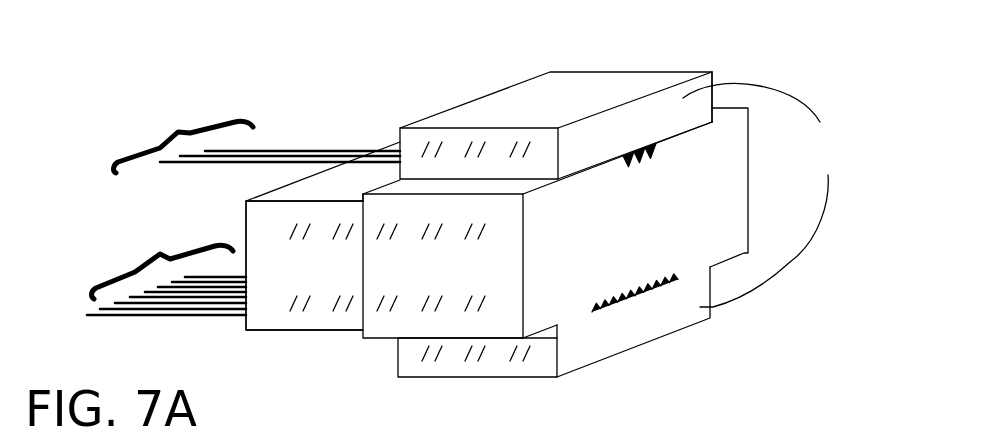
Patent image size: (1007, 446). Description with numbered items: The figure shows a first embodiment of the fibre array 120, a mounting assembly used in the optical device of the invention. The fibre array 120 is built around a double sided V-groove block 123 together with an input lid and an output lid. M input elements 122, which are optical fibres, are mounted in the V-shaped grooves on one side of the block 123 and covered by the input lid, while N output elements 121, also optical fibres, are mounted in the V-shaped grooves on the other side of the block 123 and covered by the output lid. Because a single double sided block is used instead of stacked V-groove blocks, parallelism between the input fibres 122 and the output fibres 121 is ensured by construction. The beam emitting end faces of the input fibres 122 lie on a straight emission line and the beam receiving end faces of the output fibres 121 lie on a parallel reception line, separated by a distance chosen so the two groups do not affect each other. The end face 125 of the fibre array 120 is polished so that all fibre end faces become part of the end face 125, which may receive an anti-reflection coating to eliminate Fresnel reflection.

The fibre array 120 is at (180, 55).
The output elements 121 is at (166, 274).
The input elements 122 is at (257, 135).
The double sided V-groove block 123 is at (320, 318).
The end face 125 is at (708, 175).